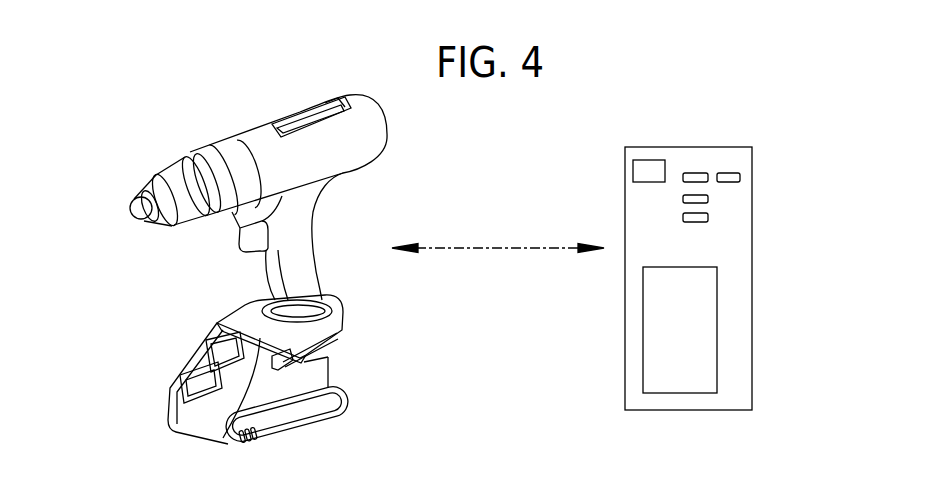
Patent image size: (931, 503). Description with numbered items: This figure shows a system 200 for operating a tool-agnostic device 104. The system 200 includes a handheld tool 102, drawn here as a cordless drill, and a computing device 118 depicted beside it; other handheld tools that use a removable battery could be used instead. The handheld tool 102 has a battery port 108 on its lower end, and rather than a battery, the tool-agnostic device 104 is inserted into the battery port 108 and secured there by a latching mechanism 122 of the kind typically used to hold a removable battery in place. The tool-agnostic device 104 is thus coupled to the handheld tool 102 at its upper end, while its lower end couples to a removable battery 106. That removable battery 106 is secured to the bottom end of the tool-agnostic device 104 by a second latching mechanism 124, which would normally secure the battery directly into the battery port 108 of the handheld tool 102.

The handheld tool 102 is at (117, 138).
The tool-agnostic device 104 is at (254, 391).
The removable battery 106 is at (263, 432).
The battery port 108 is at (344, 313).
The computing device 118 is at (752, 208).
The latching mechanism 122 is at (207, 338).
The latching mechanism 124 is at (182, 386).
The system 200 is at (760, 215).